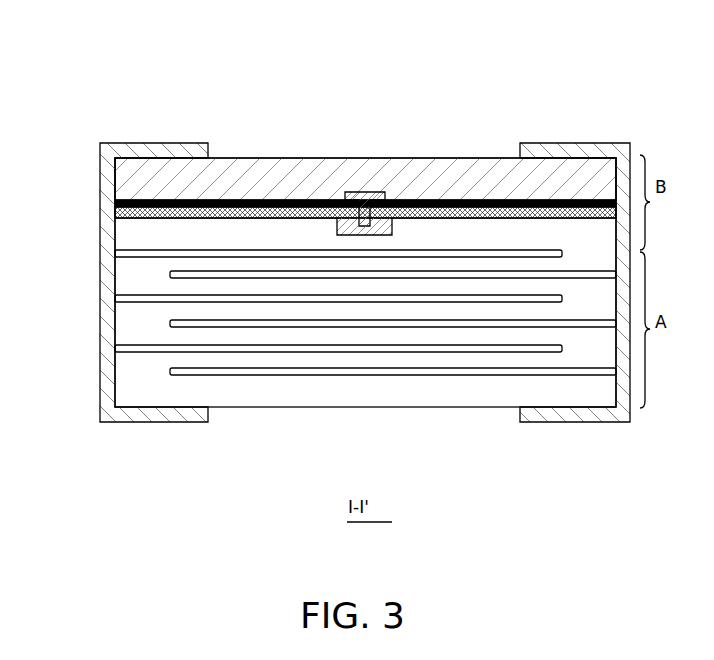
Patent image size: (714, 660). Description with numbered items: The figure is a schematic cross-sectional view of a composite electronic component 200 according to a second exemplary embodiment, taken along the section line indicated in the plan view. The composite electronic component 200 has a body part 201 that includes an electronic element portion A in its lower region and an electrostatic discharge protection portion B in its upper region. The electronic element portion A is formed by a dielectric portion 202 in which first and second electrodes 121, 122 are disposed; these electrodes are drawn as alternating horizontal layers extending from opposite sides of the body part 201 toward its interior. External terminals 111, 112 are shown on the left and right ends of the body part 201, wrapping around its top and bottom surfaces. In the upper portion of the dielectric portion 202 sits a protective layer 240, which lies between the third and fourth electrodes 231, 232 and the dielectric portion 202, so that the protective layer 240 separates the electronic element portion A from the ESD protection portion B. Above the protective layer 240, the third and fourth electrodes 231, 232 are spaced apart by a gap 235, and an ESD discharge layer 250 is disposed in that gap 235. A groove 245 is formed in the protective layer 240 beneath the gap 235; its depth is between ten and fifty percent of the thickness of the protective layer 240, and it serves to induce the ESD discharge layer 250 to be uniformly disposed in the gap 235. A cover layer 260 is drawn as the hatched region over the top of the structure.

The composite electronic component 200 is at (147, 50).
The body part 201 is at (226, 148).
The dielectric portion 202 is at (292, 355).
The first external electrode 111 is at (100, 182).
The second external electrode 112 is at (585, 148).
The first electrode 121 is at (152, 348).
The second electrode 122 is at (222, 374).
The third electrode 231 is at (143, 218).
The fourth electrode 232 is at (500, 205).
The gap 235 is at (362, 200).
The protective layer 240 is at (392, 235).
The groove 245 is at (366, 226).
The ESD discharge layer 250 is at (345, 192).
The protective layer 260 is at (424, 165).